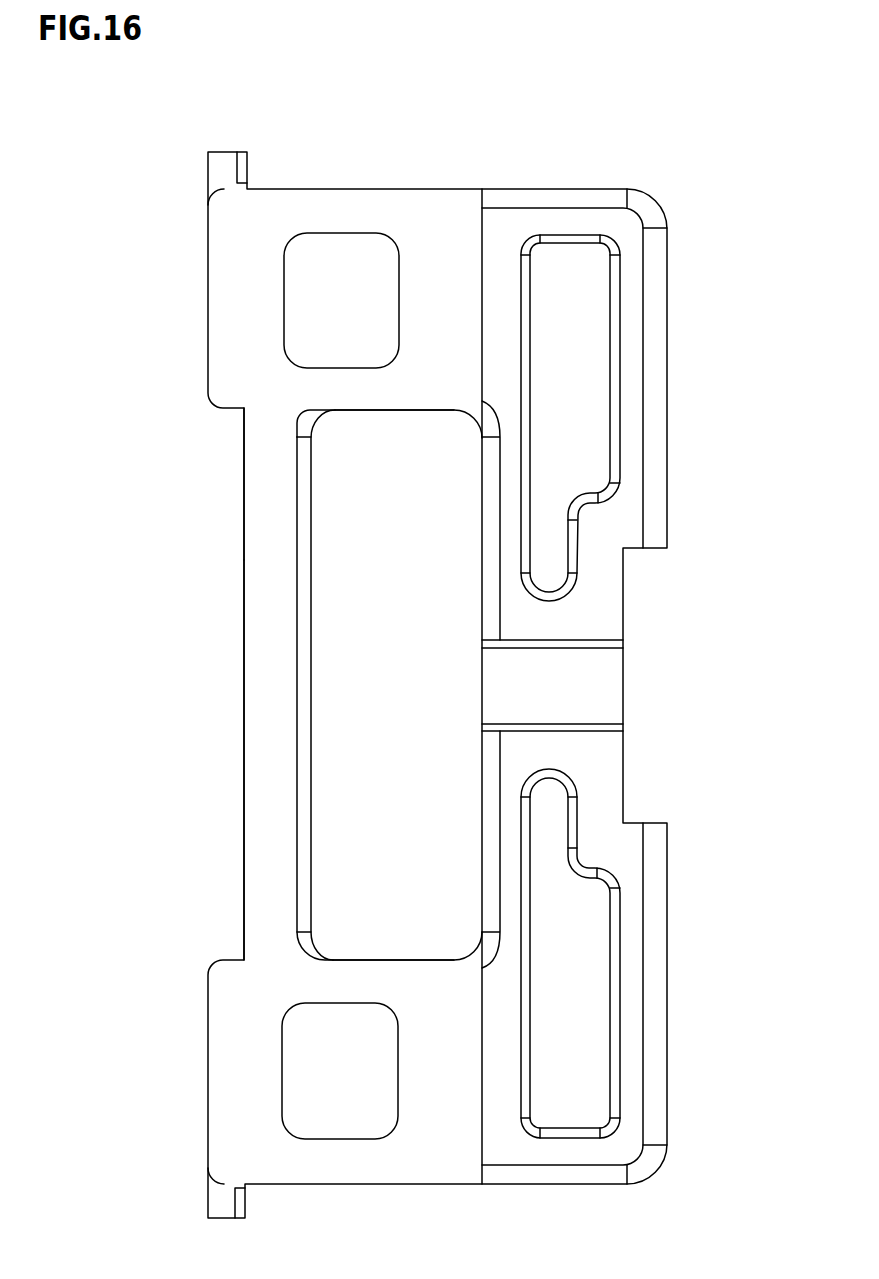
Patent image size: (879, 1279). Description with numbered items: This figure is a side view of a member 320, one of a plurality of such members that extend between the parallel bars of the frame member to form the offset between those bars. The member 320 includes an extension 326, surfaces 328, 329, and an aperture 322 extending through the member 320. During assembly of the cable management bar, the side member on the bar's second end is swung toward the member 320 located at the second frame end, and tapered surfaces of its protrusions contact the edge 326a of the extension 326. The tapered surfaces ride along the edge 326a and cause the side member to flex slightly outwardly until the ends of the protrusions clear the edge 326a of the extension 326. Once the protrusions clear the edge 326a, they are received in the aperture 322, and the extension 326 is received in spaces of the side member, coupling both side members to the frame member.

The member 320 is at (690, 130).
The aperture 322 is at (414, 704).
The extension 326 is at (263, 688).
The edge 326a is at (245, 520).
The surface 328 is at (386, 410).
The surface 329 is at (372, 960).